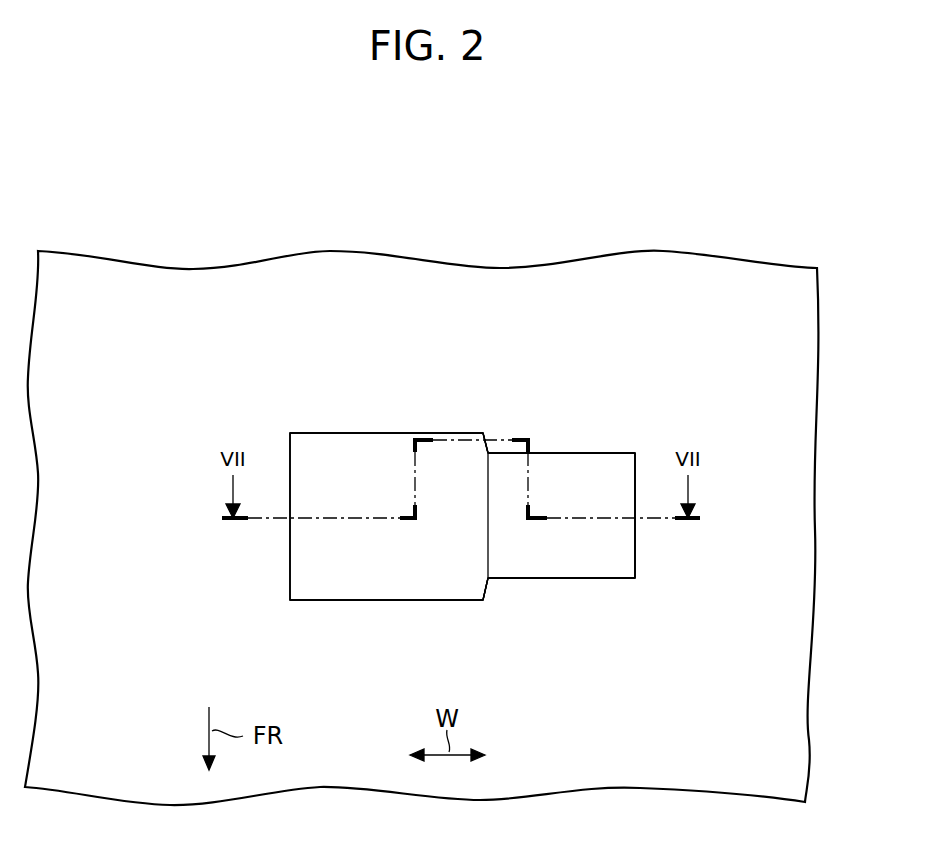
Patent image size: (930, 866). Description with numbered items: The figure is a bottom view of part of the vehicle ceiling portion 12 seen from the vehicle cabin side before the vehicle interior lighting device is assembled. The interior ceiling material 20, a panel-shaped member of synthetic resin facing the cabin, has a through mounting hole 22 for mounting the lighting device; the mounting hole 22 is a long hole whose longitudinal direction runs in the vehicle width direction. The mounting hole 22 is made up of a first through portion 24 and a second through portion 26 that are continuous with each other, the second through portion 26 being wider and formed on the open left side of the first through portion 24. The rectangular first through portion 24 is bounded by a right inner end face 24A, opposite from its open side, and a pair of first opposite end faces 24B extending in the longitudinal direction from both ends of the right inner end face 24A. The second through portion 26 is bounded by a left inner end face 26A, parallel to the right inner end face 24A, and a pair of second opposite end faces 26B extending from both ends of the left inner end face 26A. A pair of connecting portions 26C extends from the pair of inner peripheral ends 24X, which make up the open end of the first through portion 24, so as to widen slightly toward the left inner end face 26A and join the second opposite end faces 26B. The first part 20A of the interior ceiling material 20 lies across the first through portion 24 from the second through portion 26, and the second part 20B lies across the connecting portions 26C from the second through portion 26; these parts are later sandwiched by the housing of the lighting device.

The vehicle ceiling portion 12 is at (690, 753).
The interior ceiling material 20 is at (579, 291).
The first part 20A is at (642, 547).
The second part 20B is at (503, 455).
The mounting hole 22 is at (440, 584).
The first through portion 24 is at (581, 568).
The right inner end face 24A is at (630, 532).
The first opposite end faces 24B is at (590, 455).
The inner peripheral ends 24X is at (490, 457).
The second through portion 26 is at (316, 584).
The left inner end face 26A is at (298, 545).
The second opposite end faces 26B is at (370, 433).
The connecting portions 26C is at (478, 450).